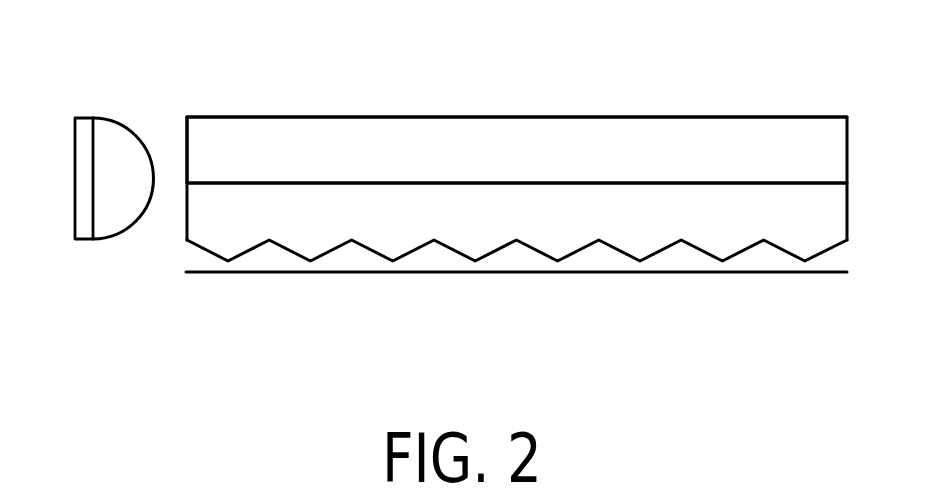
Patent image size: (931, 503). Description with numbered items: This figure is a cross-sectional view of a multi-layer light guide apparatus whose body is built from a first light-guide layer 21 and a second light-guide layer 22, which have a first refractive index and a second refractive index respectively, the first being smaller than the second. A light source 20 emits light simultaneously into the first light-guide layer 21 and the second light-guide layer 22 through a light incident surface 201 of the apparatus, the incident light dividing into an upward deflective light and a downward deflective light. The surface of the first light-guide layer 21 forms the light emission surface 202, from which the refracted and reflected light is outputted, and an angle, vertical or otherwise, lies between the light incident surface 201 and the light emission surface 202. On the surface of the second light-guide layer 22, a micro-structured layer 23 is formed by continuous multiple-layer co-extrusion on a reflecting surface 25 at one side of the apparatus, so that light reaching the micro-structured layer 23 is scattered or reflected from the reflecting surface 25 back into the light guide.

The light source 20 is at (107, 123).
The light incident surface 201 is at (187, 217).
The light emission surface 202 is at (422, 115).
The first light-guide layer 21 is at (620, 143).
The second light-guide layer 22 is at (707, 202).
The micro-structured layer 23 is at (387, 252).
The reflecting surface 25 is at (617, 273).